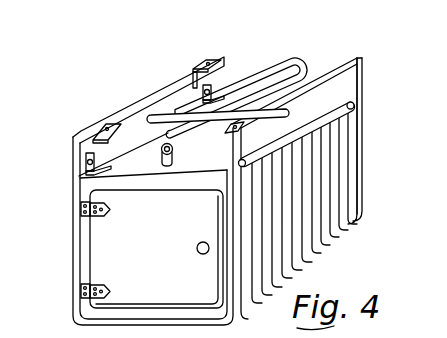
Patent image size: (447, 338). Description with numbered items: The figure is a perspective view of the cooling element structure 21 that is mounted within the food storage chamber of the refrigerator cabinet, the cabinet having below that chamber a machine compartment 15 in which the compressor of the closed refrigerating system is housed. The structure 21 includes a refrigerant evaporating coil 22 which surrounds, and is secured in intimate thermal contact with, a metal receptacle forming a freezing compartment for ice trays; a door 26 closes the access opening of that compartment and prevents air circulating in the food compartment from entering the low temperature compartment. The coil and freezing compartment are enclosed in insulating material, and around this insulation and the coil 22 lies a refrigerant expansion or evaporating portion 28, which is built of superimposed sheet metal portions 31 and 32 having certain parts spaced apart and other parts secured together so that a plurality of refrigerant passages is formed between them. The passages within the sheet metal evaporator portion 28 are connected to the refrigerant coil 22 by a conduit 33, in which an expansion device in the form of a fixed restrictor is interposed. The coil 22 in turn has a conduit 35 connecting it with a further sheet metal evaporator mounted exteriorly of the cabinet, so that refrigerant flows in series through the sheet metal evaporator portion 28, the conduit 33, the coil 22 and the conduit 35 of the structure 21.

The machine compartment 15 is at (256, 78).
The unitary element or structure 21 is at (123, 108).
The refrigerant evaporating coil 22 is at (176, 161).
The door 26 is at (103, 246).
The refrigerant expansion or evaporating portion 28 is at (337, 172).
The sheet metal portion 31 is at (365, 72).
The sheet metal portion 32 is at (342, 86).
The conduit 33 is at (252, 79).
The conduit 35 is at (162, 149).